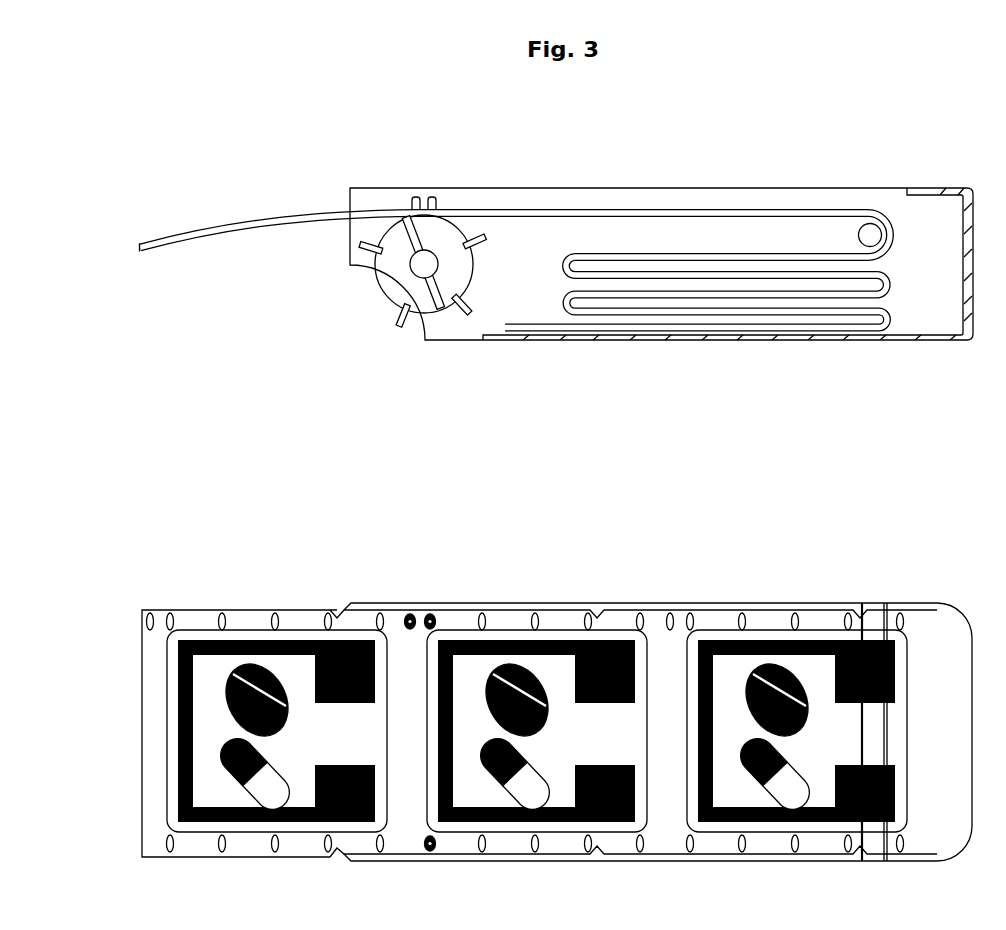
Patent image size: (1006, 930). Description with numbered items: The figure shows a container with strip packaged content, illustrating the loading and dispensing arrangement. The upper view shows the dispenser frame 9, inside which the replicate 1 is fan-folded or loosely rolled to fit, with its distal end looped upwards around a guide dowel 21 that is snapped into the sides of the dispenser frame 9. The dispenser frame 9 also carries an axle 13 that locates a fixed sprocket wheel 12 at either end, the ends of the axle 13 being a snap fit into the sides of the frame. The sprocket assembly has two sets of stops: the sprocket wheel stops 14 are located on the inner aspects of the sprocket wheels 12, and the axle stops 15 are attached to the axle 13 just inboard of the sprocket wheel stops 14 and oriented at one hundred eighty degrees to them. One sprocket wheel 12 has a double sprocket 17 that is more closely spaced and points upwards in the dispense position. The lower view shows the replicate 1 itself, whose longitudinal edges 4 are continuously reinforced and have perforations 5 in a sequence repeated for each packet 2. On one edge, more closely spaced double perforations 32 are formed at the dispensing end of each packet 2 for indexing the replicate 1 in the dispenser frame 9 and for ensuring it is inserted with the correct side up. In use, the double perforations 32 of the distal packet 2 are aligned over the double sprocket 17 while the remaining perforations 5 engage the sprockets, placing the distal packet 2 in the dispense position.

The replicate 1 is at (632, 212).
The packet 2 is at (562, 631).
The longitudinal edges 4 is at (768, 845).
The perforations 5 is at (693, 862).
The dispenser frame 9 is at (455, 602).
The sprocket wheel 12 is at (378, 294).
The axle 13 is at (440, 262).
The sprocket wheel stops 14 is at (407, 240).
The axle stops 15 is at (440, 296).
The double sprocket 17 is at (432, 197).
The guide dowel 21 is at (876, 214).
The double perforations 32 is at (170, 611).